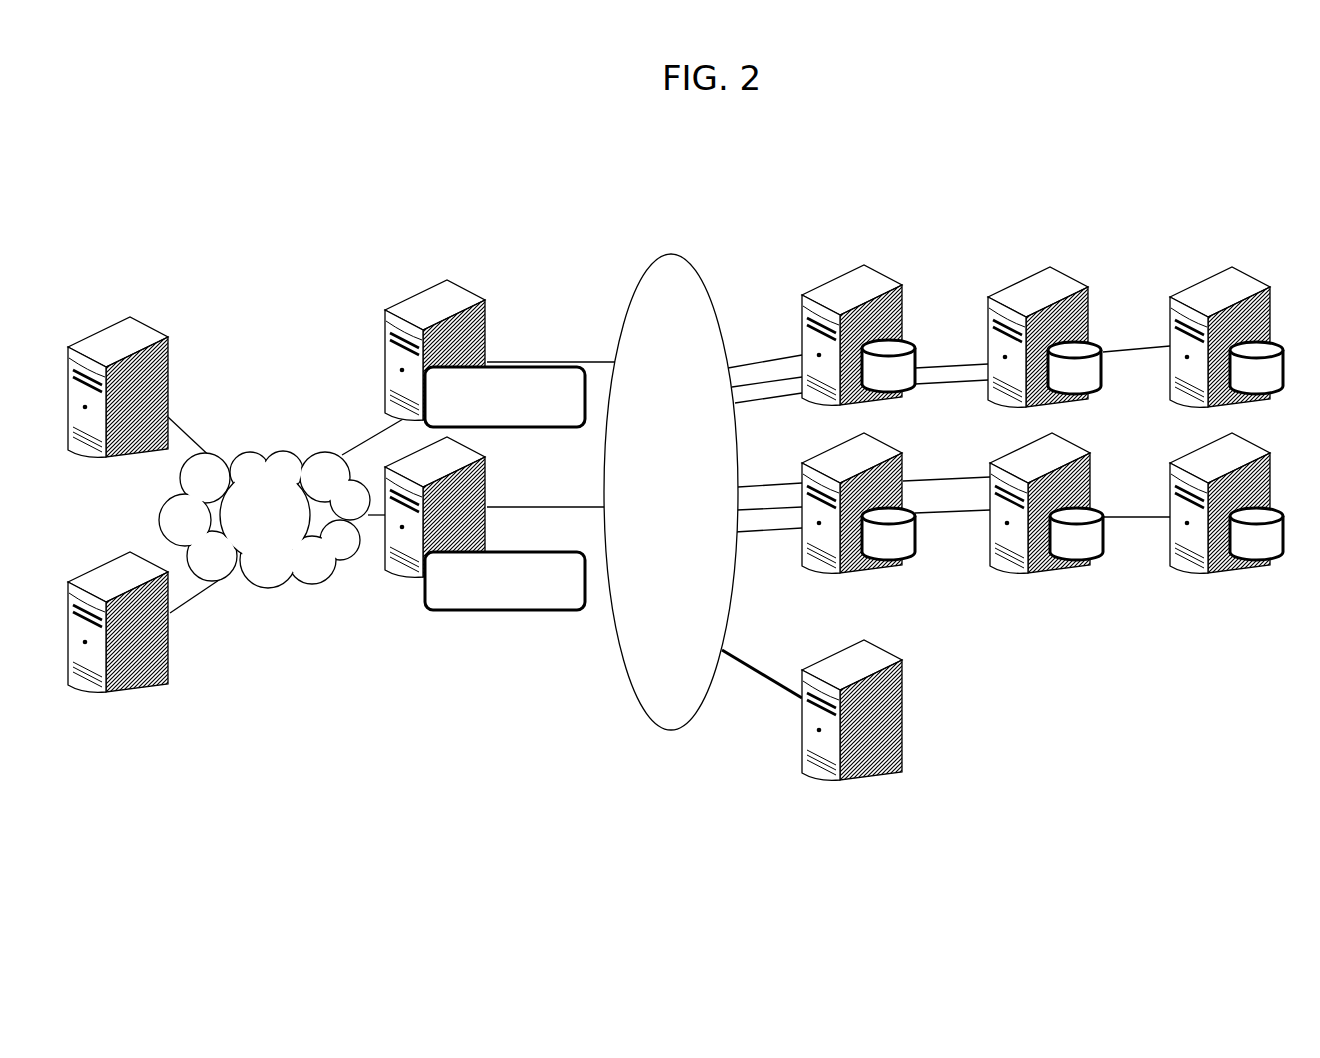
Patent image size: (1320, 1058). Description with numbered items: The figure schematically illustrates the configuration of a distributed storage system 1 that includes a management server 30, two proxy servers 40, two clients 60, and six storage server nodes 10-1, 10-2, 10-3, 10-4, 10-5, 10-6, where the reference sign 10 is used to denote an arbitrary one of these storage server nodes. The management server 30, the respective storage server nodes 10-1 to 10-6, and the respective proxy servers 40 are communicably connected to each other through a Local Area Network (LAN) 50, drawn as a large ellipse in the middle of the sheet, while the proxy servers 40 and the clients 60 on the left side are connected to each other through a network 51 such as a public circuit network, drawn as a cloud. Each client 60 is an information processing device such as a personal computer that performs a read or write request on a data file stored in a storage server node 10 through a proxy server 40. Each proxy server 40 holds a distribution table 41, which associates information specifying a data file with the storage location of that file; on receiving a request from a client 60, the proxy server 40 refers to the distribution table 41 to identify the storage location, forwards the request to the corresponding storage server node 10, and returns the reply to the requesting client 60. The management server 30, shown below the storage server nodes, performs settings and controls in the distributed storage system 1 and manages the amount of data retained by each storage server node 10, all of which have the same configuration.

The distributed storage system 1 is at (1167, 792).
The storage server node 10 is at (1042, 428).
The storage server node 10-1 is at (808, 274).
The storage server node 10-2 is at (1003, 275).
The storage server node 10-3 is at (1185, 275).
The storage server node 10-4 is at (867, 582).
The storage server node 10-5 is at (1050, 582).
The storage server node 10-6 is at (1235, 582).
The management server 30 is at (868, 790).
The proxy server 40 is at (428, 278).
The distribution table 41 is at (565, 428).
The Local Area Network (LAN) 50 is at (707, 735).
The network 51 is at (278, 600).
The client 60 is at (104, 318).